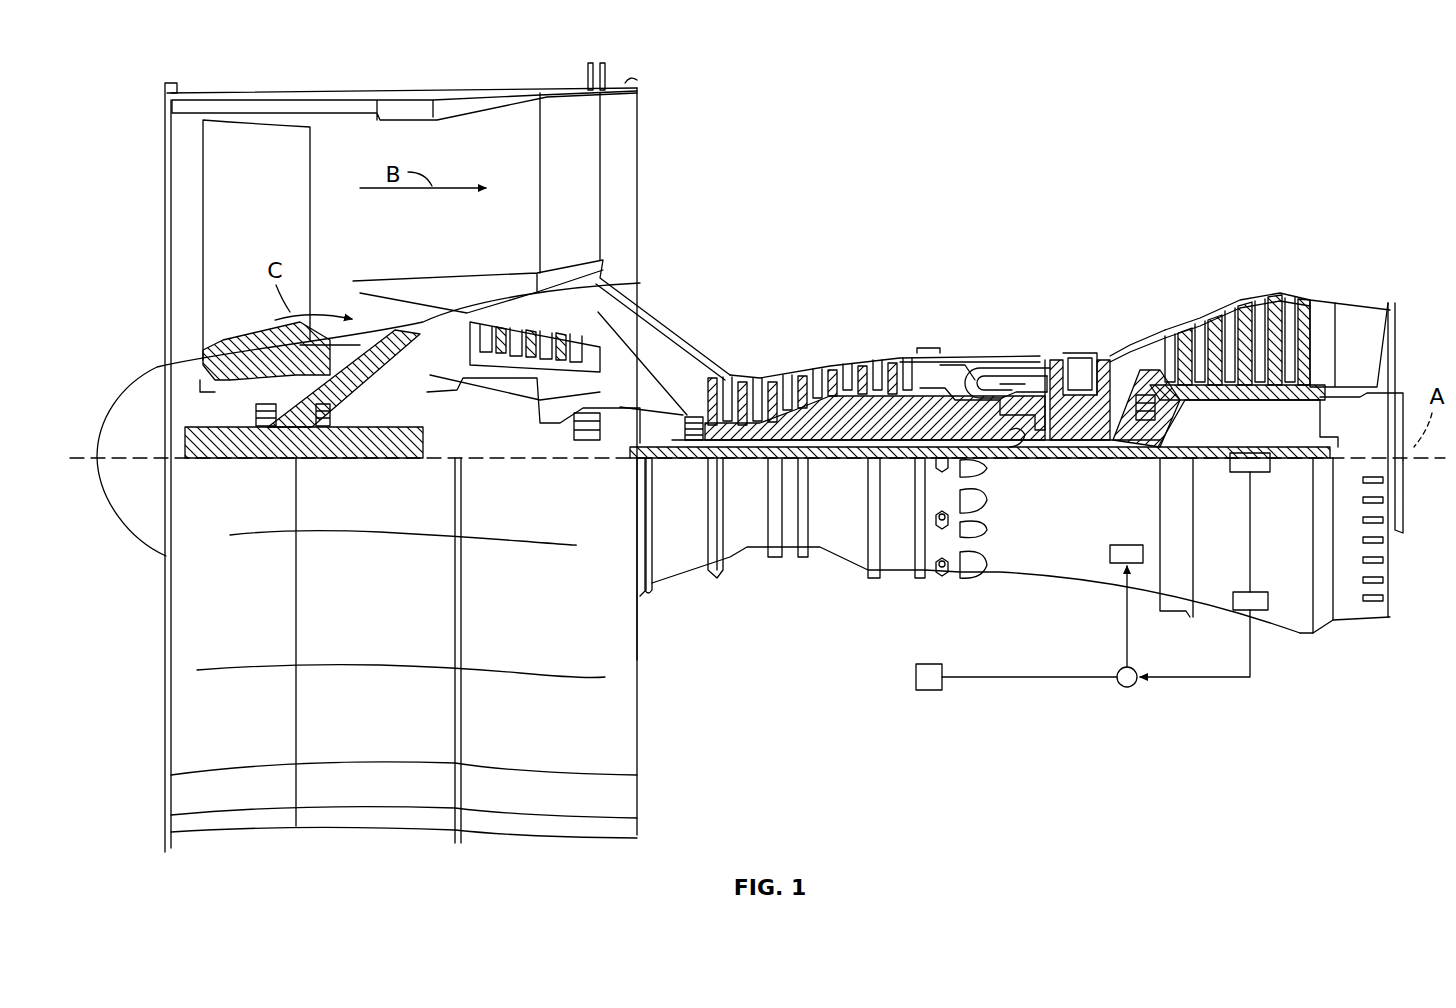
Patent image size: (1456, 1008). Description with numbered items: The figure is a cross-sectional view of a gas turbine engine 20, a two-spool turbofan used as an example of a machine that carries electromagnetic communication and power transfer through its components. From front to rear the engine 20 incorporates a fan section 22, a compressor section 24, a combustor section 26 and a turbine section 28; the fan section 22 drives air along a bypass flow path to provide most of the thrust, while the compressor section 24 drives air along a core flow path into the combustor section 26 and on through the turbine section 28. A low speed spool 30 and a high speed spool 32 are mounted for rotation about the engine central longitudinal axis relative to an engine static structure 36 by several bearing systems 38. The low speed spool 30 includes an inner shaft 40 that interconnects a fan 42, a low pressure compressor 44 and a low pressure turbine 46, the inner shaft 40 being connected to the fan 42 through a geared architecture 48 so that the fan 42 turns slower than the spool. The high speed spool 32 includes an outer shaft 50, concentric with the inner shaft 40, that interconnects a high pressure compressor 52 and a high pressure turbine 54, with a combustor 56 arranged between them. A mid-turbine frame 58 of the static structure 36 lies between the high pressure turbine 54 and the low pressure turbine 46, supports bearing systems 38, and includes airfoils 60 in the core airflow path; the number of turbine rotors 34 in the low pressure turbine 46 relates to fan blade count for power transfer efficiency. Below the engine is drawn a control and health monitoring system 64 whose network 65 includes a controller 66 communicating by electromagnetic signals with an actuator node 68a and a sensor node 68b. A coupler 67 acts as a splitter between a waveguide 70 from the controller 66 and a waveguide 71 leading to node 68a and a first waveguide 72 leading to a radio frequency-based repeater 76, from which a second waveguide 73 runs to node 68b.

The gas turbine engine 20 is at (1213, 125).
The fan section 22 is at (435, 75).
The compressor section 24 is at (828, 318).
The combustor section 26 is at (995, 318).
The turbine section 28 is at (1118, 268).
The low speed spool 30 is at (860, 455).
The high speed spool 32 is at (915, 400).
The turbine rotors 34 is at (1185, 412).
The engine static structure 36 is at (900, 585).
The bearing systems 38 is at (266, 427).
The inner shaft 40 is at (652, 452).
The fan 42 is at (281, 212).
The low pressure compressor 44 is at (560, 330).
The low pressure turbine 46 is at (1245, 315).
The geared architecture 48 is at (397, 430).
The outer shaft 50 is at (1025, 435).
The high pressure compressor 52 is at (820, 425).
The high pressure turbine 54 is at (1080, 365).
The combustor 56 is at (1000, 380).
The mid-turbine frame 58 is at (1132, 348).
The airfoils 60 is at (1122, 372).
The control and health monitoring system 64 is at (1193, 712).
The network 65 is at (1316, 725).
The controller 66 is at (915, 682).
The coupler 67 is at (1130, 688).
The actuator node 68a is at (1108, 550).
The sensor node 68b is at (1262, 472).
The waveguide 70 is at (980, 680).
The waveguide 71 is at (1126, 645).
The first waveguide 72 is at (1255, 672).
The second waveguide 73 is at (1248, 542).
The radio frequency-based repeater 76 is at (1262, 612).